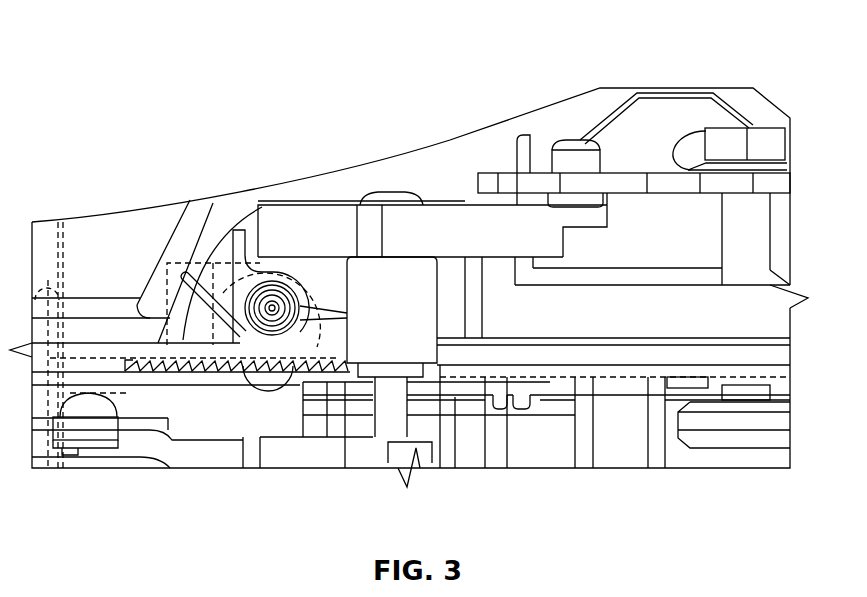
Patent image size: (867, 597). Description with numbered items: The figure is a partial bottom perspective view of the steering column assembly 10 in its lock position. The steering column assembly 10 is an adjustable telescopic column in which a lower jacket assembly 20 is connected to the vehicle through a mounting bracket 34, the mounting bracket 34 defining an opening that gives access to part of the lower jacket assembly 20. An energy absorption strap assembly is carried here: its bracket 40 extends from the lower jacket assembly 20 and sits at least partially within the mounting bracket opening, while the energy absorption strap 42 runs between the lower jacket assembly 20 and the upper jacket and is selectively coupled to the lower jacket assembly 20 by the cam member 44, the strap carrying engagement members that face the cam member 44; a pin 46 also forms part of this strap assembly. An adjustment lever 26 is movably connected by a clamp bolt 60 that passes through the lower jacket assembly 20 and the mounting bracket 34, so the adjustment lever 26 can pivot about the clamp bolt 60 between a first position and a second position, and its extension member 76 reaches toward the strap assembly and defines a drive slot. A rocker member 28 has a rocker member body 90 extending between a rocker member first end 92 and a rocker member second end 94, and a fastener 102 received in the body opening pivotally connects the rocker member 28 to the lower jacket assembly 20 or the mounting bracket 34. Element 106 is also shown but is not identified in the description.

The steering column assembly 10 is at (728, 55).
The lower jacket assembly 20 is at (207, 430).
The adjustment lever 26 is at (782, 205).
The rocker member 28 is at (397, 330).
The mounting bracket 34 is at (582, 100).
The bracket 40 is at (143, 288).
The energy absorption strap 42 is at (163, 377).
The cam member 44 is at (237, 237).
The pin 46 is at (272, 310).
The clamp bolt 60 is at (773, 147).
The extension member 76 is at (670, 185).
The rocker member body 90 is at (433, 220).
The rocker member first end 92 is at (580, 220).
The rocker member second end 94 is at (278, 227).
The fastener 102 is at (400, 197).
The bolt 106 is at (592, 163).